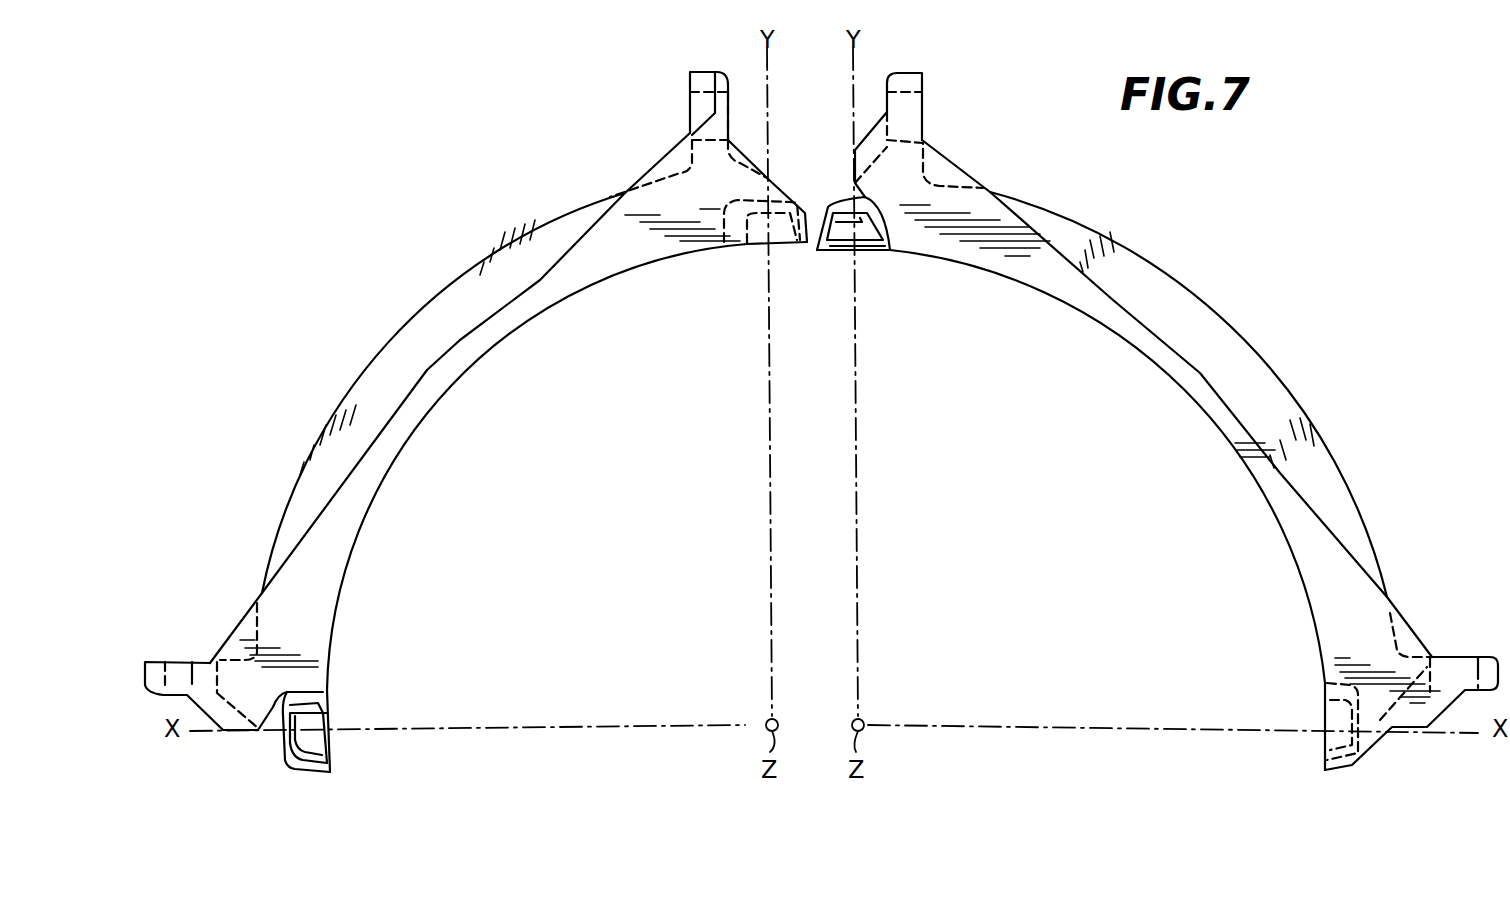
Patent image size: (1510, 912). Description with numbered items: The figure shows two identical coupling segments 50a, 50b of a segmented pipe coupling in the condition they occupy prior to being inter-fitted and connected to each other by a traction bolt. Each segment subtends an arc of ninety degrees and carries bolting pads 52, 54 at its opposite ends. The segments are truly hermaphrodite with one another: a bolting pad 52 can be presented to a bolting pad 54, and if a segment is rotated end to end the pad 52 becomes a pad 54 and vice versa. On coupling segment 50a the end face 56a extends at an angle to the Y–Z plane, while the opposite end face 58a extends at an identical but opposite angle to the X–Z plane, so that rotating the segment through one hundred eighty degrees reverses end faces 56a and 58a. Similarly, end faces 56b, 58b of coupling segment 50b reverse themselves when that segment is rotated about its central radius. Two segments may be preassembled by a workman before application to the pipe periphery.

The coupling segment 50a is at (1176, 305).
The coupling segment 50b is at (446, 300).
The bolting pad 52 is at (155, 662).
The bolting pad 54 is at (690, 72).
The end face 56a is at (890, 252).
The end face 56b is at (330, 690).
The end face 58a is at (1352, 766).
The end face 58b is at (743, 237).